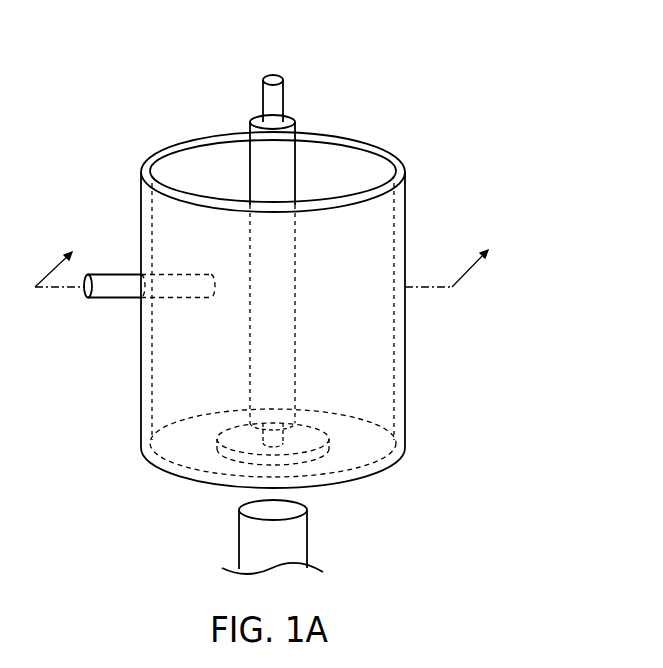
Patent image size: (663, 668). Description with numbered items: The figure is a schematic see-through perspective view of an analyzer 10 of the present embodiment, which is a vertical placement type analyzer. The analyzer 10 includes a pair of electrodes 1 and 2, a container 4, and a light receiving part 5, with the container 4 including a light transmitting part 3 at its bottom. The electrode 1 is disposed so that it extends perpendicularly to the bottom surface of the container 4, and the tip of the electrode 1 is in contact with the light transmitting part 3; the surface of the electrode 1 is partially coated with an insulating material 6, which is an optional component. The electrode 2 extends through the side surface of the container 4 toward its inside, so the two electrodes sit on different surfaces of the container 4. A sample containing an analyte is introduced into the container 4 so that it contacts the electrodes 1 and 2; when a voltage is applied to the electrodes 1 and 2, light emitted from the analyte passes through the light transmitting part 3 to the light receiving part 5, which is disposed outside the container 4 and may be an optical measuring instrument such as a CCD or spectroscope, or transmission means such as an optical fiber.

The analyzer 10 is at (358, 55).
The electrode 1 is at (277, 101).
The electrode 2 is at (108, 290).
The light transmitting part 3 is at (320, 434).
The container 4 is at (402, 352).
The light receiving part 5 is at (297, 542).
The insulating material 6 is at (280, 170).